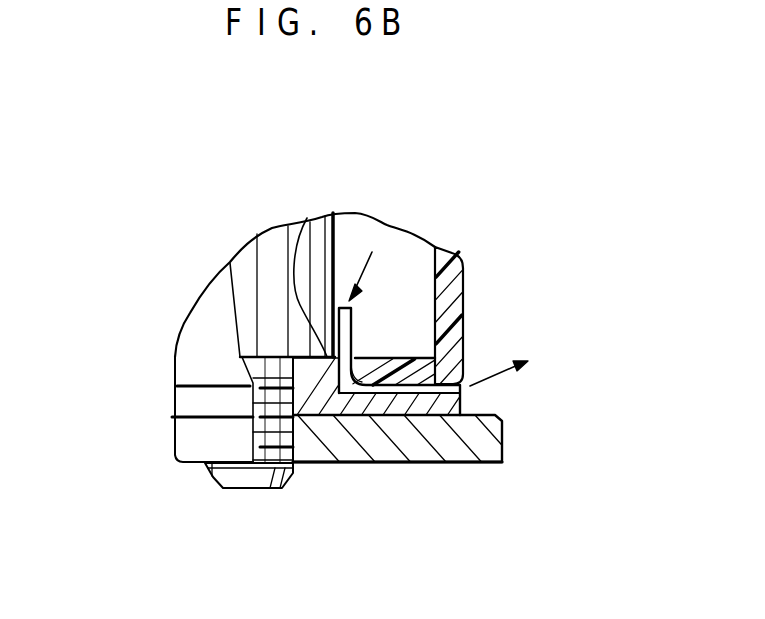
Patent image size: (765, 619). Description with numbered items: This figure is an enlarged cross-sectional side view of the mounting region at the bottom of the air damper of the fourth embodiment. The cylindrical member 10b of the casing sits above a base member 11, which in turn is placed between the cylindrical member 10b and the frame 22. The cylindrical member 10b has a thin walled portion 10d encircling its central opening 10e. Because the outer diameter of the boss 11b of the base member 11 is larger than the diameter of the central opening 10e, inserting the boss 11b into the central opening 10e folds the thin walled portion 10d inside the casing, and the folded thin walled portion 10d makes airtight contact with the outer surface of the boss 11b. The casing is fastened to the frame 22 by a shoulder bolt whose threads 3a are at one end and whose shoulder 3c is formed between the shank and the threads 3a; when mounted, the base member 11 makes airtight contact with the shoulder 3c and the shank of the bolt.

The boss 11b is at (307, 218).
The central opening 10e is at (351, 350).
The cylindrical member 10b is at (447, 281).
The shoulder 3c is at (325, 357).
The threads 3a is at (248, 477).
The base member 11 is at (323, 415).
The thin walled portion 10d is at (389, 394).
The frame 22 is at (487, 447).